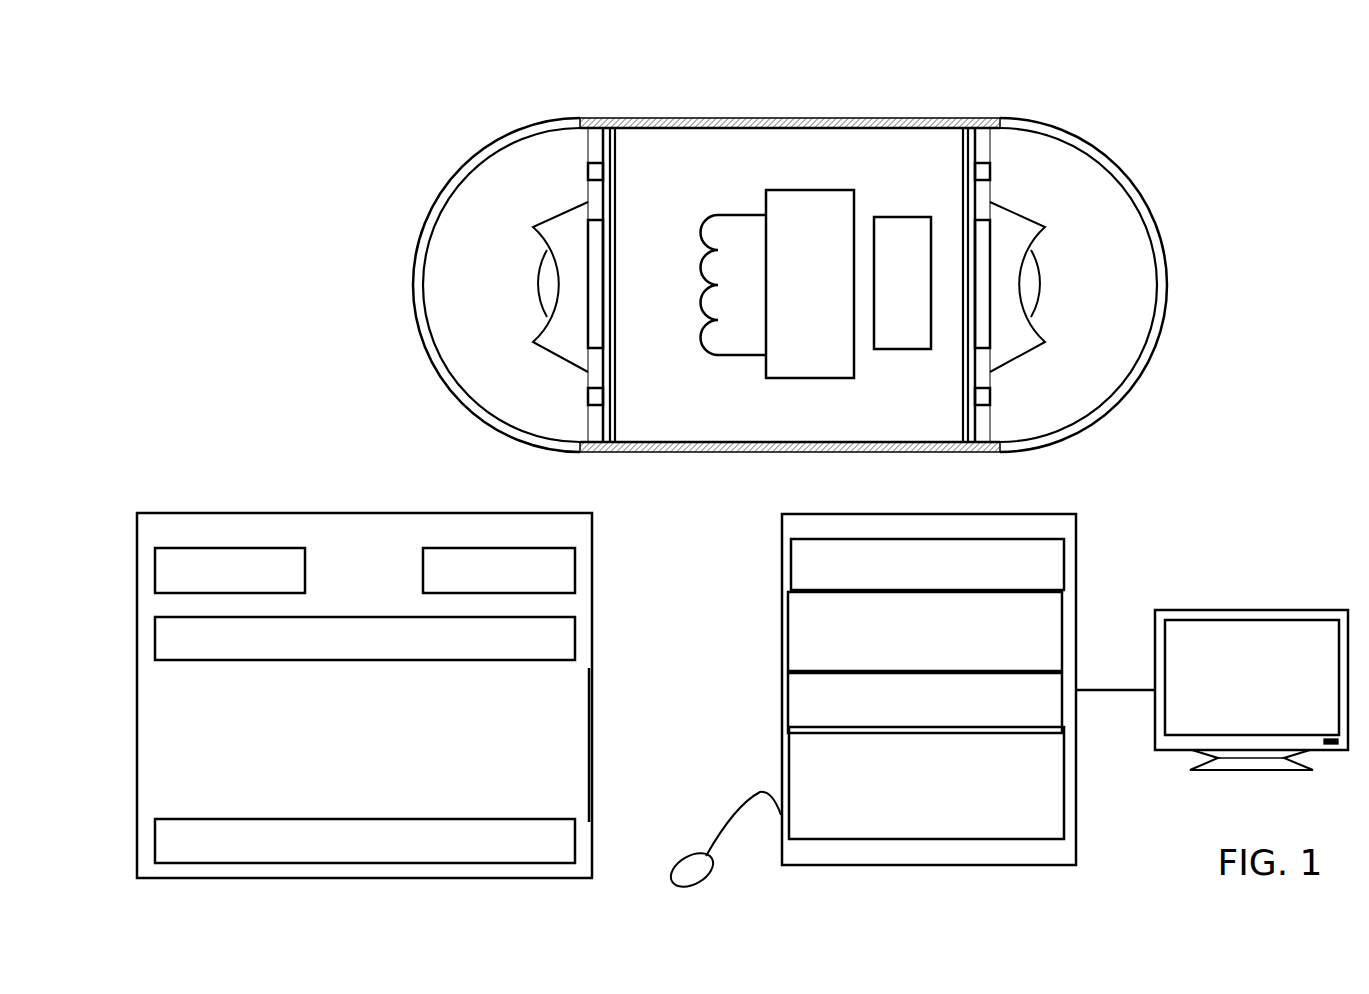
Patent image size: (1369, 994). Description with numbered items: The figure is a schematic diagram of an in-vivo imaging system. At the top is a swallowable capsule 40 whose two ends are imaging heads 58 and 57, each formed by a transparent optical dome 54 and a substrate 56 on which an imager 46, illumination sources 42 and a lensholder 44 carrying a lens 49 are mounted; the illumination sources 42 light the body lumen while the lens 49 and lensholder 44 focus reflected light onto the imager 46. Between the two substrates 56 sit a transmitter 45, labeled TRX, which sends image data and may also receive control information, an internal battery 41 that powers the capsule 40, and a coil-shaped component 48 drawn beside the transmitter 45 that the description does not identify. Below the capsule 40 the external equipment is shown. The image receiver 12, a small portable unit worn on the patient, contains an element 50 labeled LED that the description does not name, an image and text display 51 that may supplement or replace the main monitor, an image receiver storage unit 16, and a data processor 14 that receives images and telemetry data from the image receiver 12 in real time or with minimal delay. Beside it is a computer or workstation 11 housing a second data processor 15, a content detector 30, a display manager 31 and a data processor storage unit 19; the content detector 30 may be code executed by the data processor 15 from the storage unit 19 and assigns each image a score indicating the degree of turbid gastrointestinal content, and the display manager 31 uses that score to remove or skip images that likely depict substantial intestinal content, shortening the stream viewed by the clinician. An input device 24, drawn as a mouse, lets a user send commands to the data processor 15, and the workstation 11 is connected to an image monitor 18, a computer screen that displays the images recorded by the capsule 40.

The capsule 40 is at (803, 112).
The imaging head 58 is at (412, 214).
The imaging head 57 is at (1164, 214).
The optical dome 54 is at (503, 150).
The substrate 56 is at (617, 414).
The illumination sources 42 is at (586, 172).
The imager 46 is at (600, 325).
The lensholder 44 is at (548, 220).
The lens 49 is at (540, 268).
The antenna coil 48 is at (720, 212).
The transmitter 45 is at (806, 189).
The internal battery 41 is at (898, 216).
The image receiver 12 is at (188, 512).
The LED indicator 50 is at (307, 572).
The image and/or text display 51 is at (577, 573).
The image receiver storage unit 16 is at (577, 639).
The data processor 14 is at (577, 843).
The workstation 11 is at (1078, 567).
The data processor 15 is at (790, 560).
The content detector 30 is at (790, 649).
The display manager 31 is at (778, 727).
The data processor storage unit 19 is at (926, 783).
The input device 24 is at (728, 822).
The image monitor 18 is at (1295, 609).